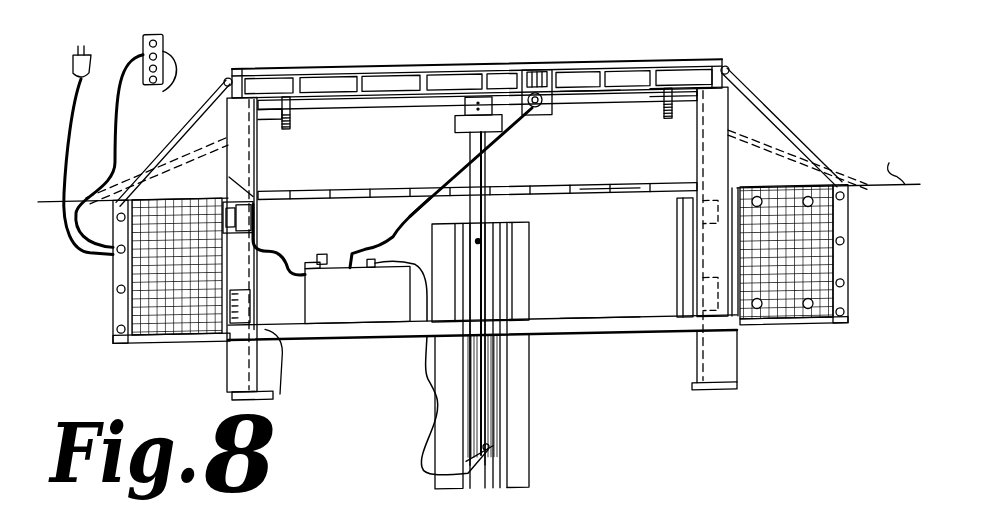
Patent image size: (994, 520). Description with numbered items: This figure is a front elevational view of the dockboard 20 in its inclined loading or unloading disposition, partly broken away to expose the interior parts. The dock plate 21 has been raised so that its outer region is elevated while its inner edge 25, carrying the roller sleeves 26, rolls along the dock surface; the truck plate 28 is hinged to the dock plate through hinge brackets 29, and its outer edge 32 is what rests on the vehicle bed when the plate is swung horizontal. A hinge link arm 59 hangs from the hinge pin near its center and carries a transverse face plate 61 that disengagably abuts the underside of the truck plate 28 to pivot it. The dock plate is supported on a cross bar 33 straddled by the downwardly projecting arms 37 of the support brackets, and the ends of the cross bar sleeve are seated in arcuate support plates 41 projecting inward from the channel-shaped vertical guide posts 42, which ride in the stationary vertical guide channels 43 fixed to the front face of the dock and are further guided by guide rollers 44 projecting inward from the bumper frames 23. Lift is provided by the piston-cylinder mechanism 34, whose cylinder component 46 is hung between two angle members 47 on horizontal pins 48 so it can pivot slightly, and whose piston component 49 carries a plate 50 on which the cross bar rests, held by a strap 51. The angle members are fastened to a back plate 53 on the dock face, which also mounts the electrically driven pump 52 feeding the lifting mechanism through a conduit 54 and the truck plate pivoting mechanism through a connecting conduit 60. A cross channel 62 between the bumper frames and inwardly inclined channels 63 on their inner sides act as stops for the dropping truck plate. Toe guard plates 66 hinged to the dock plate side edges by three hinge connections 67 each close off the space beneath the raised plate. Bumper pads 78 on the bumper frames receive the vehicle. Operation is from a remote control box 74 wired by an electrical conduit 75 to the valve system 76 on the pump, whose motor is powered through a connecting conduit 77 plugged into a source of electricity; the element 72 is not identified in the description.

The dockboard 20 is at (785, 108).
The dock plate 21 is at (572, 143).
The bumper frames 23 is at (778, 337).
The inner edge 25 is at (538, 192).
The roller sleeves 26 is at (596, 192).
The truck plate 28 is at (622, 67).
The hinge brackets 29 is at (266, 80).
The outer edge of the truck plate 32 is at (437, 69).
The cross bar 33 is at (363, 110).
The piston-cylinder mechanism 34 is at (487, 220).
The arms 37 is at (291, 128).
The arcuate support plates 41 is at (260, 124).
The vertical guide posts 42 is at (257, 178).
The vertical guide channels 43 is at (683, 236).
The guide rollers 44 is at (255, 225).
The cylinder component 46 is at (492, 280).
The angle members 47 is at (515, 293).
The horizontal pins 48 is at (529, 240).
The piston component 49 is at (488, 152).
The plate 50 is at (457, 137).
The strap 51 is at (484, 101).
The pump 52 is at (348, 330).
The back plate 53 is at (583, 300).
The conduit 54 is at (423, 377).
The hinge link arm 59 is at (557, 76).
The connecting conduit 60 is at (397, 237).
The face plate 61 is at (531, 76).
The cross channel 62 is at (580, 333).
The inwardly inclined channels 63 is at (716, 262).
The toe guard plate 66 is at (167, 147).
The hinge connections 67 is at (226, 79).
The folded brace position 72 is at (111, 185).
The control box 74 is at (158, 88).
The electrical conduit 75 is at (117, 131).
The valve system 76 is at (322, 256).
The connecting conduit 77 is at (70, 116).
The bumper pads 78 is at (850, 270).